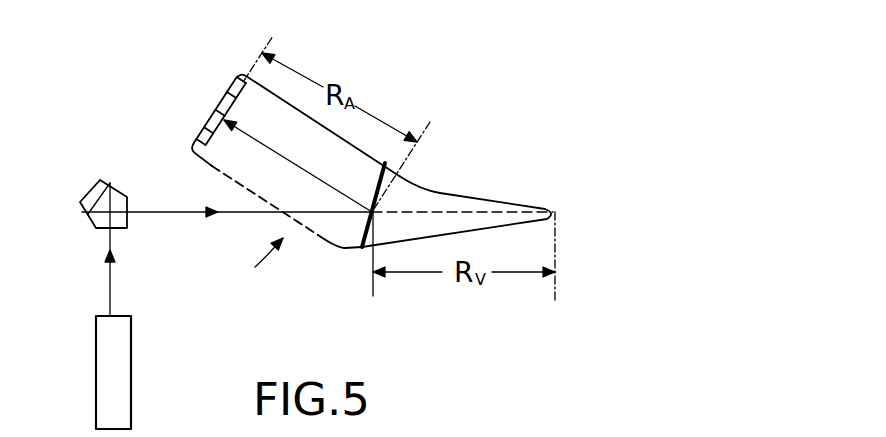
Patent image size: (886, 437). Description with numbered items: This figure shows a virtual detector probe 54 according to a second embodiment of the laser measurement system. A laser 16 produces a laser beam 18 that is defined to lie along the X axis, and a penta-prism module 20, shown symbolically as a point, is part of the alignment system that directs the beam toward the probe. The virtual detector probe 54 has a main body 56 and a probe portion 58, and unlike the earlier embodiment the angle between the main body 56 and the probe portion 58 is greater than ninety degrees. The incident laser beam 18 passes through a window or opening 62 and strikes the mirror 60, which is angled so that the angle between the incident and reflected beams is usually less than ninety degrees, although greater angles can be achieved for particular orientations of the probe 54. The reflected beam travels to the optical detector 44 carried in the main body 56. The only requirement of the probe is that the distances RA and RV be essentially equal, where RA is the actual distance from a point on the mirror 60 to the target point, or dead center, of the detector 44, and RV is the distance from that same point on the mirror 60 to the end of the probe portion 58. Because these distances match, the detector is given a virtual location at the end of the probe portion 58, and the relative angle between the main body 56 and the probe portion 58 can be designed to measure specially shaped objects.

The laser 16 is at (96, 370).
The laser beam 18 is at (173, 214).
The penta-prism module 20 is at (90, 216).
The optical detector 44 is at (217, 100).
The virtual detector probe 54 is at (248, 258).
The main body 56 is at (210, 168).
The probe portion 58 is at (481, 198).
The mirror 60 is at (366, 226).
The window or opening 62 is at (247, 190).